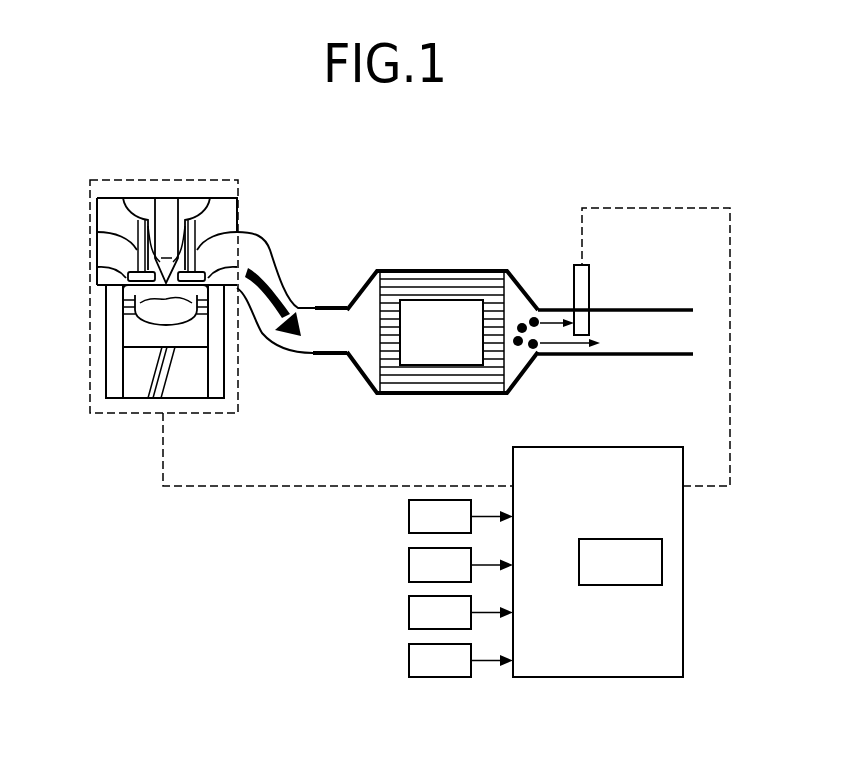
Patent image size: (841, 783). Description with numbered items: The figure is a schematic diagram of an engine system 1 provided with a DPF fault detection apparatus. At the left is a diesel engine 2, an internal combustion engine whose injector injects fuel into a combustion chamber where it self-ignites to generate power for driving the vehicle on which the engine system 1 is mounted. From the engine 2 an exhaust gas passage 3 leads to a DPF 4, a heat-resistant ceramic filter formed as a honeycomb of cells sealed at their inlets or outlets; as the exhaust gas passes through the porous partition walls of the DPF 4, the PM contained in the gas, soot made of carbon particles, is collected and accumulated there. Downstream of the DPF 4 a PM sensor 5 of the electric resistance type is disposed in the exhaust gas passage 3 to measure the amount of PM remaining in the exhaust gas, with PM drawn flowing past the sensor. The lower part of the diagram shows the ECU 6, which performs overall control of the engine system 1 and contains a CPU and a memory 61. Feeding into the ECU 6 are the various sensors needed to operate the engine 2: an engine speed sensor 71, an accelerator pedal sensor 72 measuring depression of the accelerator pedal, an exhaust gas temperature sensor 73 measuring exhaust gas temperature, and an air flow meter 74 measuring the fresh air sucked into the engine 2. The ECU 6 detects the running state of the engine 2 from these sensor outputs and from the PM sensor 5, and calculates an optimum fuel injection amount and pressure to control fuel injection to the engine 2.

The engine system 1 is at (102, 165).
The diesel engine 2 is at (165, 180).
The exhaust gas passage 3 is at (272, 252).
The DPF (diesel particulate filter) 4 is at (445, 271).
The PM sensor 5 is at (576, 264).
The ECU 6 is at (620, 447).
The memory 61 is at (662, 562).
The engine speed sensor 71 is at (409, 515).
The accelerator pedal sensor 72 is at (409, 564).
The exhaust gas temperature sensor 73 is at (409, 612).
The air flow meter 74 is at (409, 660).
The particulate matter PM is at (538, 348).